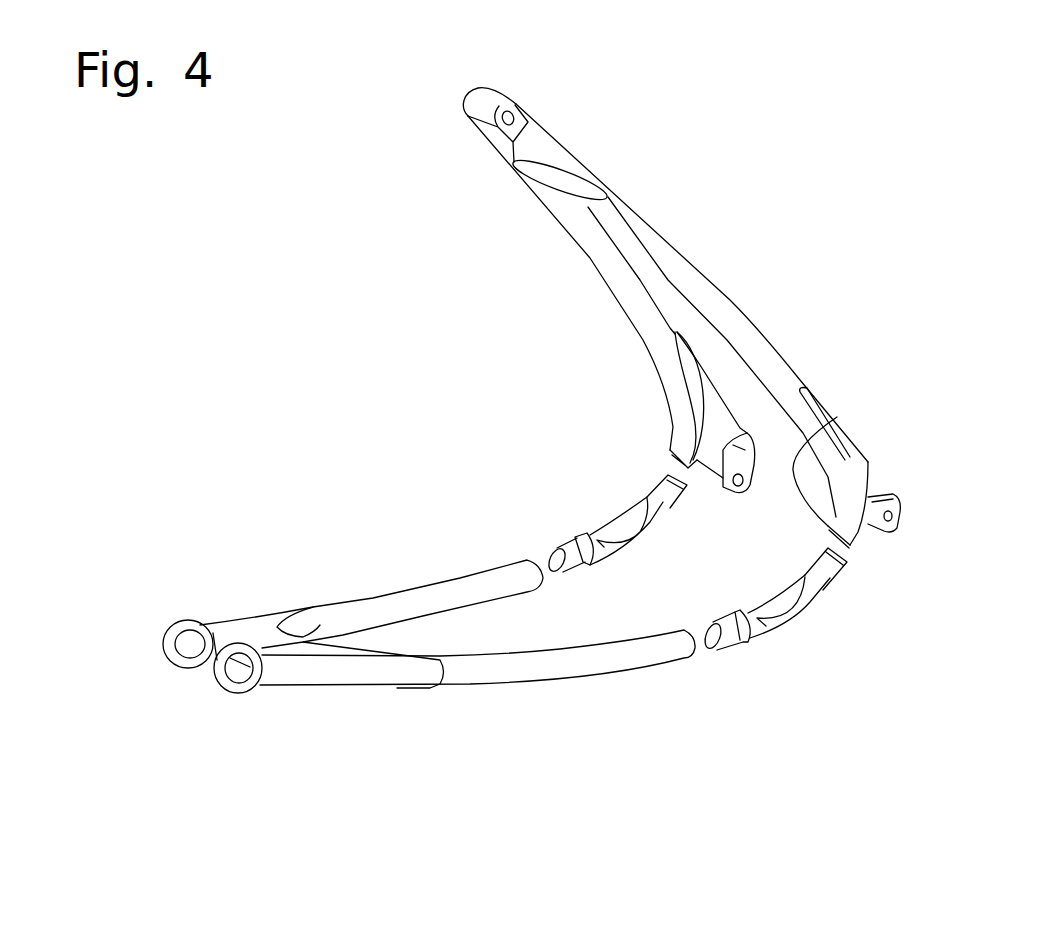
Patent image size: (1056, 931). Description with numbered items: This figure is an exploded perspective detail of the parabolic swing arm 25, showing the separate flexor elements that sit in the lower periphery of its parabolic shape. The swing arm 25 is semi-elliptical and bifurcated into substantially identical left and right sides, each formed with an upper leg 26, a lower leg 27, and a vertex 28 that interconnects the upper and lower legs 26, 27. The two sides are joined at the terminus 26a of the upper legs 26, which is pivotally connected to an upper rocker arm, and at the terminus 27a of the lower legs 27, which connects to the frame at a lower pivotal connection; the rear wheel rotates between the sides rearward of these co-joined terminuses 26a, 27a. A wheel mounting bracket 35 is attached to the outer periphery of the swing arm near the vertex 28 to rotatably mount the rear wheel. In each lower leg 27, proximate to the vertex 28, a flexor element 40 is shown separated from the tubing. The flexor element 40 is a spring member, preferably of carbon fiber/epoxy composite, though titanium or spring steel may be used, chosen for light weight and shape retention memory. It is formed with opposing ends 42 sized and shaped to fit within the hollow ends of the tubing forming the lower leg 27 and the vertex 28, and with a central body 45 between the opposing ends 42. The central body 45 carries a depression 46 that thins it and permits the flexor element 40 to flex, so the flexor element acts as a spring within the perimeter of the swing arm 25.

The swing arm 25 is at (722, 172).
The upper leg 26 is at (722, 288).
The terminus of the upper legs 26a is at (504, 95).
The lower leg 27 is at (373, 598).
The terminus of the lower legs 27a is at (258, 693).
The vertex 28 is at (665, 432).
The wheel mounting bracket 35 is at (723, 387).
The flexor element 40 is at (637, 548).
The opposing ends 42 is at (551, 552).
The central body 45 is at (607, 562).
The depression 46 is at (610, 518).